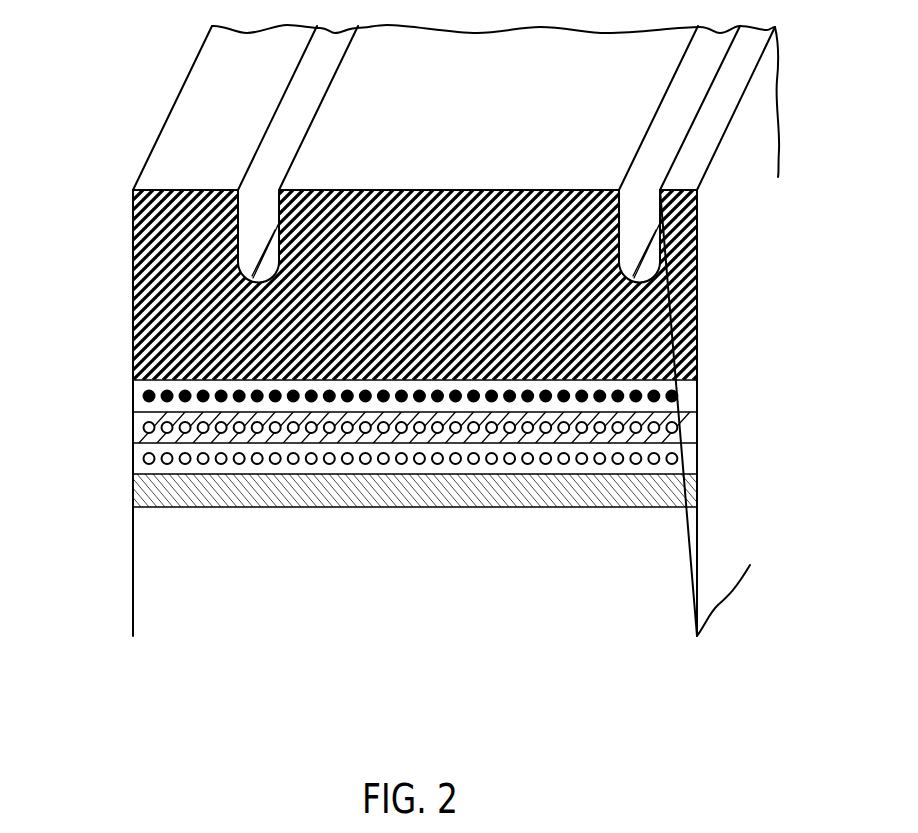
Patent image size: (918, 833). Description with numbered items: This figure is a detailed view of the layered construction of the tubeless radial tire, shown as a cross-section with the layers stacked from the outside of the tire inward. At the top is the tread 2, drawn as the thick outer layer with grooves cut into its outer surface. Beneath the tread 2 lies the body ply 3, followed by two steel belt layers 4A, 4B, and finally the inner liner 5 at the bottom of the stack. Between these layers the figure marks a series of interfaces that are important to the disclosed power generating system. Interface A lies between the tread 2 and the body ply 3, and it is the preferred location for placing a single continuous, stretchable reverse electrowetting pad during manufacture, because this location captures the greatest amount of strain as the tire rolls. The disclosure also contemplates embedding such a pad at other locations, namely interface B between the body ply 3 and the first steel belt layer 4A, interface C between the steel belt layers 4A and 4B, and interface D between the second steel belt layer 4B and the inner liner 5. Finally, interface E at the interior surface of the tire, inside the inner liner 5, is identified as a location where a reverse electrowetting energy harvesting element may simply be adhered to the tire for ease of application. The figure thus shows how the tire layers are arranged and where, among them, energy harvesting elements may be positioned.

The tread 2 is at (690, 282).
The body ply 3 is at (685, 395).
The steel belt layer 4A is at (685, 427).
The steel belt layer 4B is at (685, 458).
The inner liner 5 is at (685, 492).
The interface A is at (133, 380).
The interface B is at (133, 412).
The interface C is at (133, 443).
The interface D is at (133, 474).
The interface E is at (133, 507).